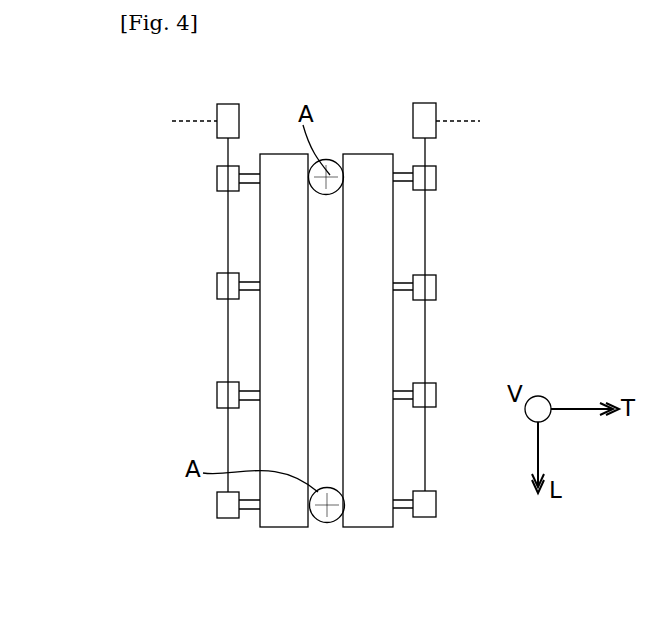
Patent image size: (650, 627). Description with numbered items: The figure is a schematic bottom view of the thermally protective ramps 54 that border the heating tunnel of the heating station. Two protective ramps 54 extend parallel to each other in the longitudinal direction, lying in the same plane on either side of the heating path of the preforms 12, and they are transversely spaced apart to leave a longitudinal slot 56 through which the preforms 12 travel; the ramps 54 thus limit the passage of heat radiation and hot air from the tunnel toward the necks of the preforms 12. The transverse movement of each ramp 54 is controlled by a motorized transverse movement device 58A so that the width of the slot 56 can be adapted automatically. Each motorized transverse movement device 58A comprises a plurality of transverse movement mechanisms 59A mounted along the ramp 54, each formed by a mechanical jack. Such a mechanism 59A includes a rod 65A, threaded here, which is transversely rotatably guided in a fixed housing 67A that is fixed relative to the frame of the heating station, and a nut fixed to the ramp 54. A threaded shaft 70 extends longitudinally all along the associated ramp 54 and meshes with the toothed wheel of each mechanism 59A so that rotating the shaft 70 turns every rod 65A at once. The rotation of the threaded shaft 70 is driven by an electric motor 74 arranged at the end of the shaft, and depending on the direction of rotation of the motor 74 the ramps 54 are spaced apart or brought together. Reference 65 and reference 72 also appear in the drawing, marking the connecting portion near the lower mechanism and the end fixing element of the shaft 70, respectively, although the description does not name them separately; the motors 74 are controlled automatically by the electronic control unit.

The preform 12 is at (317, 197).
The protective ramp 54 is at (280, 205).
The longitudinal slot 56 is at (323, 337).
The motorized transverse movement device 58A is at (200, 385).
The transverse movement mechanism 59A is at (489, 348).
The coupling portion 65 is at (405, 509).
The rod 65A is at (405, 173).
The fixed housing 67A is at (428, 175).
The threaded shaft 70 is at (427, 242).
The end fixing portion 72 is at (428, 498).
The electric motor 74 is at (222, 128).